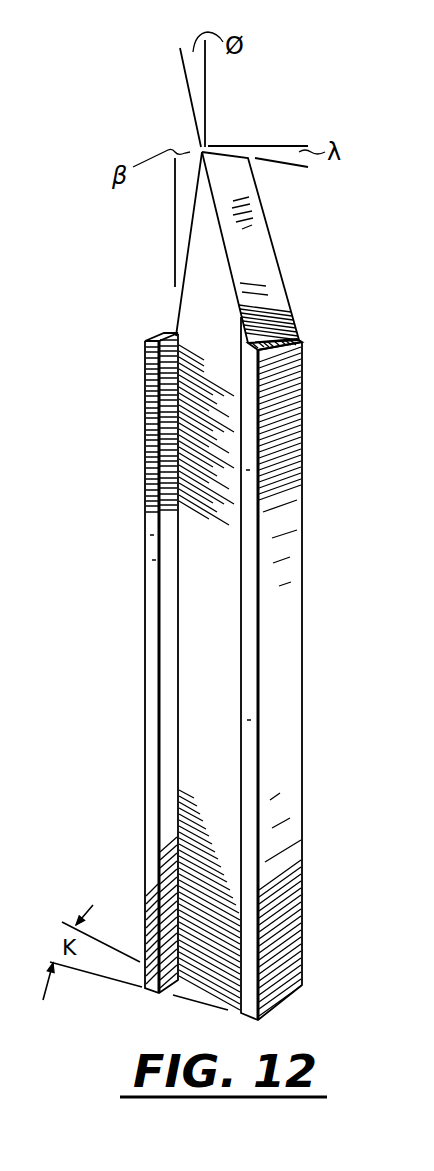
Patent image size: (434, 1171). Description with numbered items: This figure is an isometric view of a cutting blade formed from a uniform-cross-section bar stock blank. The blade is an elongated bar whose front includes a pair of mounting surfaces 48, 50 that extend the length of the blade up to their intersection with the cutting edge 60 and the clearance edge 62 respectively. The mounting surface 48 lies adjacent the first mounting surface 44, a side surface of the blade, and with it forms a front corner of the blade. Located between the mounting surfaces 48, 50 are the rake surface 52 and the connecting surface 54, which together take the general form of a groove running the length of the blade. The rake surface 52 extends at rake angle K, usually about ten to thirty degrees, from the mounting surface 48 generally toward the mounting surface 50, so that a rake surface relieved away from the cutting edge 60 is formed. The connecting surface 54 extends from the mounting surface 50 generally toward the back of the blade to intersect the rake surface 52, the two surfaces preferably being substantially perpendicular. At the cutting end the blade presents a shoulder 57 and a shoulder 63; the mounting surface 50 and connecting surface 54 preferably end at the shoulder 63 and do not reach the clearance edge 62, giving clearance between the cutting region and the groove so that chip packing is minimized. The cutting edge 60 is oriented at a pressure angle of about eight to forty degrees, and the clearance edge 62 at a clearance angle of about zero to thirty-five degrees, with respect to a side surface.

The first mounting surface 44 is at (282, 585).
The mounting surface 48 is at (252, 498).
The mounting surface 50 is at (255, 285).
The rake surface 52 is at (190, 477).
The connecting surface 54 is at (168, 603).
The shoulder 57 is at (292, 341).
The cutting edge 60 is at (230, 257).
The clearance edge 62 is at (190, 152).
The shoulder 63 is at (161, 334).